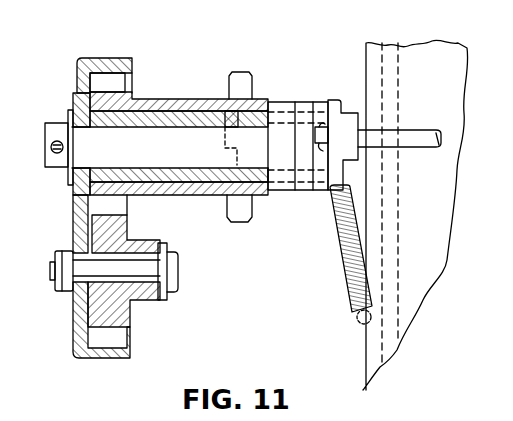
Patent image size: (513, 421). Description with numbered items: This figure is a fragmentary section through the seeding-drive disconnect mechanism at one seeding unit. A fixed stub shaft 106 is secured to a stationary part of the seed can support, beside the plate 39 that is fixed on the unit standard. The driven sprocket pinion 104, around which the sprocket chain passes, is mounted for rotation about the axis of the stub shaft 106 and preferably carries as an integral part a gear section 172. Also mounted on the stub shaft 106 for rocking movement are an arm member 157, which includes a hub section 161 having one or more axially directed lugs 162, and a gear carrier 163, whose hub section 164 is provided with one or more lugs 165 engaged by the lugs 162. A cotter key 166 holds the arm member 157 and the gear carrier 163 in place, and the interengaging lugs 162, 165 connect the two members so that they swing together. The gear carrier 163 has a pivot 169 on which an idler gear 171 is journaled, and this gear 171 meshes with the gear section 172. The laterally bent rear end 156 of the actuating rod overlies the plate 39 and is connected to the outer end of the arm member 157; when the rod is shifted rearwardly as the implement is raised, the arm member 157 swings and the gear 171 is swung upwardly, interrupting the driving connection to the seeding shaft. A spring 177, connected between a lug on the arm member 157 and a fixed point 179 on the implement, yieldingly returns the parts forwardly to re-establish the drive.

The plate 39 is at (431, 246).
The sprocket pinion 104 is at (243, 83).
The stub shaft 106 is at (184, 155).
The rear end of rod 156 is at (415, 137).
The arm member 157 is at (345, 120).
The hub section 161 is at (255, 190).
The lug 162 is at (232, 119).
The gear carrier 163 is at (82, 92).
The hub section 164 is at (177, 120).
The lug 165 is at (232, 172).
The cotter key 166 is at (55, 166).
The pivot 169 is at (175, 283).
The gear 171 is at (118, 308).
The gear section 172 is at (120, 84).
The spring 177 is at (342, 232).
The fixed point 179 is at (358, 322).